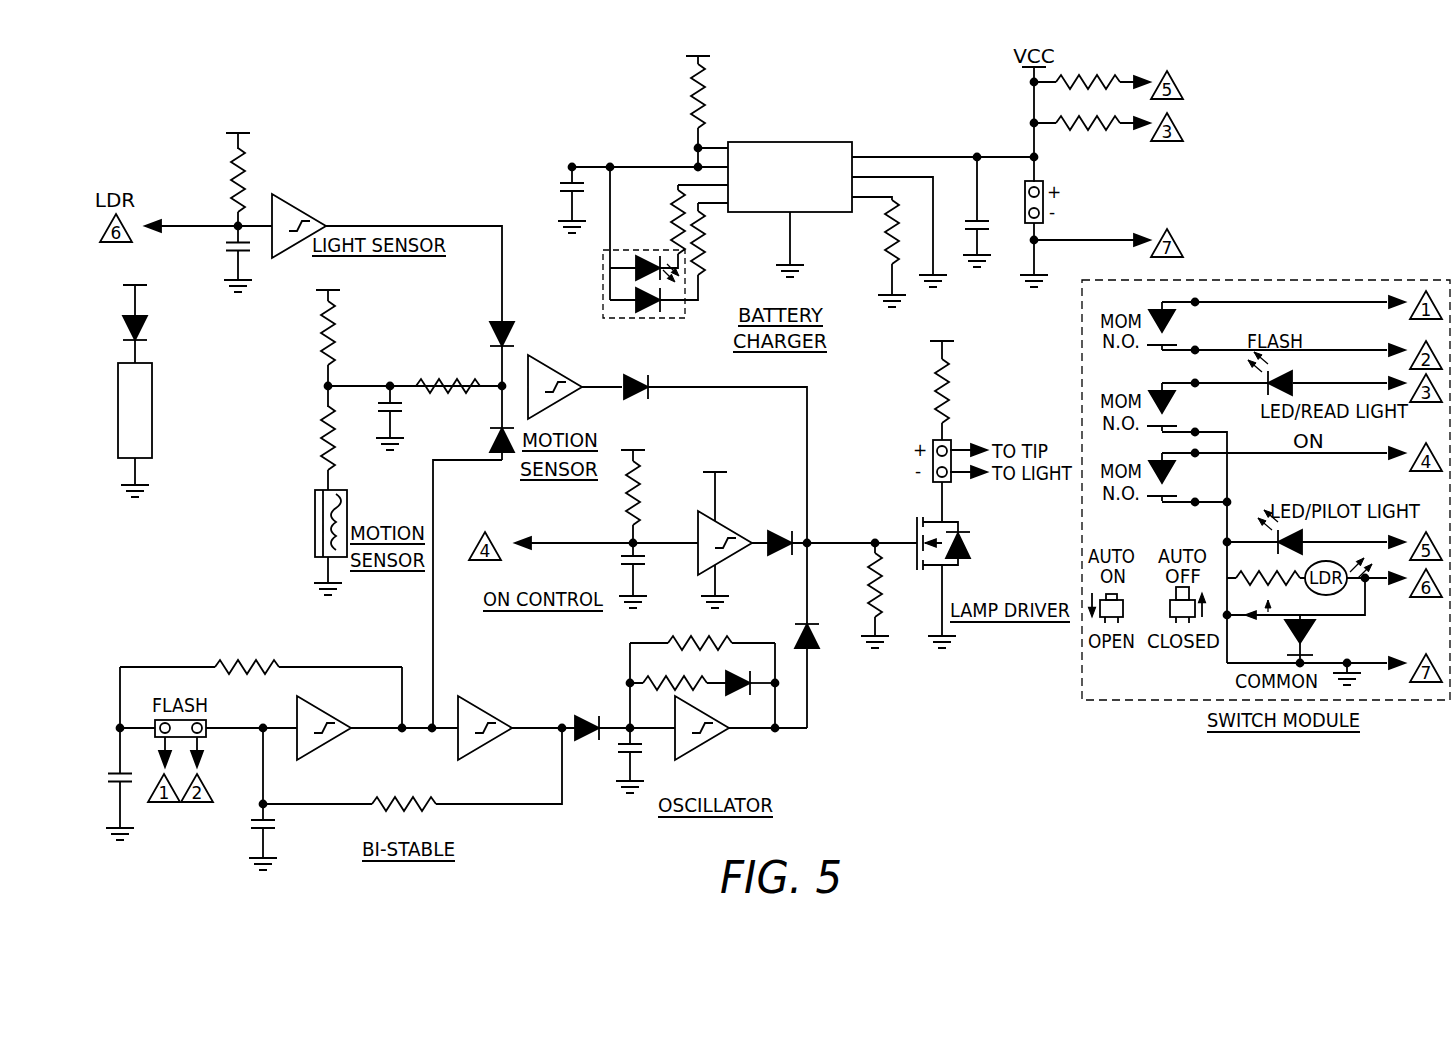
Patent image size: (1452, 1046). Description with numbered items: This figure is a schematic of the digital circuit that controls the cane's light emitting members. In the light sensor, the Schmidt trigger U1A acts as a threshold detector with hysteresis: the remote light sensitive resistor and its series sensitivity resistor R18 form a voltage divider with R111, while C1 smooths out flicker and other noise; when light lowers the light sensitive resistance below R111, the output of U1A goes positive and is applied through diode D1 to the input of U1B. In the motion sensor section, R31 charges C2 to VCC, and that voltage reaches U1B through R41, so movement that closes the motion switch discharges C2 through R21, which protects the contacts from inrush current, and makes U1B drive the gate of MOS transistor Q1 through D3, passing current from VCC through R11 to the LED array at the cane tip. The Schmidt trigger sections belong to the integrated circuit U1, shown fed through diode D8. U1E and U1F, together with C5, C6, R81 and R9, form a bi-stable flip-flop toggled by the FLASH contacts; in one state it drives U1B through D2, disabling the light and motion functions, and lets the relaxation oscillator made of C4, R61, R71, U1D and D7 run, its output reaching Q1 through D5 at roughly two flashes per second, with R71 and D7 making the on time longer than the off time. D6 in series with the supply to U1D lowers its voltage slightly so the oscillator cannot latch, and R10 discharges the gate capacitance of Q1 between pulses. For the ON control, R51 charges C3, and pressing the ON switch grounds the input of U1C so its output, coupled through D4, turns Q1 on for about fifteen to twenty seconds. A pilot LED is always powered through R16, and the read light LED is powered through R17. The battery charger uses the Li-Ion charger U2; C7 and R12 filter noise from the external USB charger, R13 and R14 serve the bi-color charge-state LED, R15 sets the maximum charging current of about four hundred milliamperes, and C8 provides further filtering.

The resistor R111 is at (218, 168).
The capacitor C1 is at (223, 259).
The Schmidt trigger U1A is at (296, 215).
The diode D8 is at (132, 313).
The 74HC14D hex inverter IC U1 is at (150, 430).
The resistor R31 is at (315, 327).
The capacitor C2 is at (378, 418).
The resistor R41 is at (448, 372).
The resistor R21 is at (308, 438).
The diode D1 is at (488, 349).
The diode D2 is at (488, 423).
The Schmidt trigger U1B is at (554, 382).
The diode D3 is at (632, 374).
The resistor R51 is at (619, 485).
The capacitor C3 is at (621, 575).
The Schmidt trigger U1C is at (722, 528).
The diode D4 is at (776, 557).
The diode D5 is at (825, 676).
The diode D6 is at (582, 717).
The capacitor C4 is at (618, 760).
The resistor R61 is at (700, 631).
The resistor R71 is at (678, 670).
The diode D7 is at (746, 696).
The Schmidt trigger U1D is at (701, 736).
The resistor R9 is at (247, 654).
The Schmidt trigger U1F is at (323, 718).
The Schmidt trigger U1E is at (484, 718).
The capacitor C6 is at (108, 784).
The capacitor C5 is at (251, 799).
The resistor R81 is at (412, 769).
The resistor R12 is at (684, 90).
The Li-Ion charger circuit U2 is at (792, 198).
The capacitor C7 is at (559, 200).
The resistor R13 is at (679, 226).
The resistor R14 is at (704, 251).
The resistor R15 is at (879, 253).
The capacitor C8 is at (964, 212).
The resistor R16 is at (1092, 69).
The resistor R17 is at (1092, 139).
The resistor R11 is at (928, 379).
The MOS transistor Q1 is at (961, 565).
The resistor R10 is at (857, 595).
The variable resistor R18 is at (1266, 567).